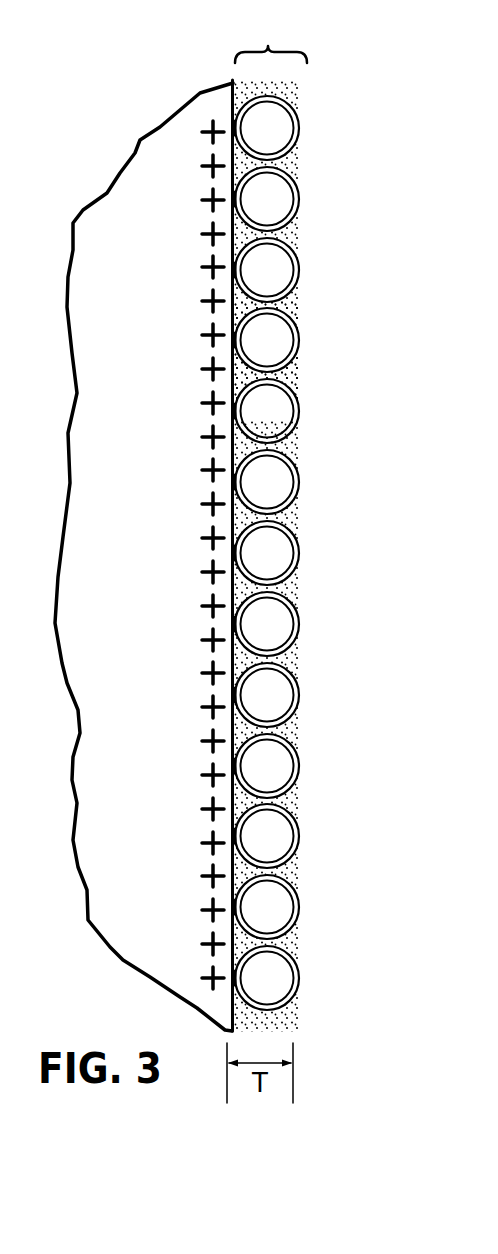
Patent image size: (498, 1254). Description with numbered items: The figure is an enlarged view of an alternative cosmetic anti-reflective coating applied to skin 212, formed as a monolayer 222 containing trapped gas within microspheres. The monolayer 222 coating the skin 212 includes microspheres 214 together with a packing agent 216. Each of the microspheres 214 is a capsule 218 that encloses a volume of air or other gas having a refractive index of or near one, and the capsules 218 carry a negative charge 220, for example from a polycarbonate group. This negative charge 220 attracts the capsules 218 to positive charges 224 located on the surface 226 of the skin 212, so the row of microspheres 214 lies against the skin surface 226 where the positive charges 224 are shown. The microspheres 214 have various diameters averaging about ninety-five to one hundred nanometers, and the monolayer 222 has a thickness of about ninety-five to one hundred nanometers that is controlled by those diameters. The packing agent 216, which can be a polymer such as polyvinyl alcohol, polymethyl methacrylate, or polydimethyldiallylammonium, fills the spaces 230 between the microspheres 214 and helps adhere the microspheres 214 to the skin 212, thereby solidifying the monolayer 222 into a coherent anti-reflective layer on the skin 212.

The skin 212 is at (108, 643).
The microspheres 214 is at (272, 121).
The packing agent 216 is at (291, 233).
The capsules 218 is at (299, 131).
The negative charge 220 is at (225, 131).
The monolayer 222 is at (271, 38).
The positive charges 224 is at (212, 270).
The surface 226 is at (233, 420).
The spaces 230 is at (286, 377).